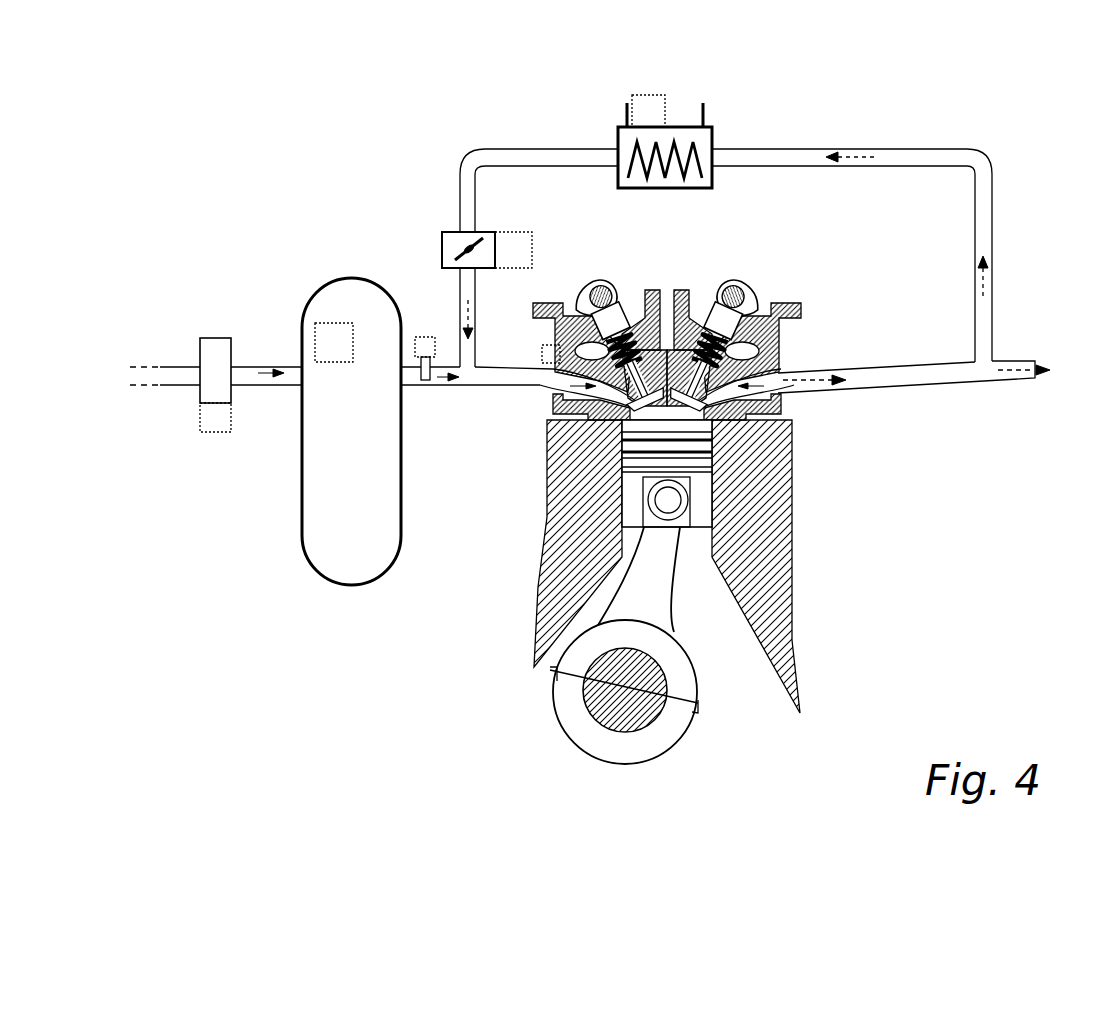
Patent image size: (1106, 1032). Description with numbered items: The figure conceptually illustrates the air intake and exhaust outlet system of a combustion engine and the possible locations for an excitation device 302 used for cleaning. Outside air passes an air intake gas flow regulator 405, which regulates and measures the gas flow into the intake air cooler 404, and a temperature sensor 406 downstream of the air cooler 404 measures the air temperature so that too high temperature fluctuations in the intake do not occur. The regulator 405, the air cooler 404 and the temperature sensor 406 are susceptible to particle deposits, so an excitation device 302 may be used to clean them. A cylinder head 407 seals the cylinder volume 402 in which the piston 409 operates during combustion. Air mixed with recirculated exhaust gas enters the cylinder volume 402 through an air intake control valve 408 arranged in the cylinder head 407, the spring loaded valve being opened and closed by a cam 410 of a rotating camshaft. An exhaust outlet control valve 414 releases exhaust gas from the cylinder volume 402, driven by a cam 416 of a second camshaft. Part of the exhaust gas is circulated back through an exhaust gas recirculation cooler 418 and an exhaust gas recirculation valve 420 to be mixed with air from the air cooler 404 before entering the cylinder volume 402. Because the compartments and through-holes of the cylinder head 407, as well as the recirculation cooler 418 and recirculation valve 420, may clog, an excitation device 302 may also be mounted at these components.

The excitation device 302 is at (204, 433).
The cylinder volume 402 is at (597, 503).
The intake air cooler 404 is at (350, 292).
The air intake gas flow regulator 405 is at (217, 337).
The temperature sensor 406 is at (422, 387).
The cylinder head 407 is at (577, 327).
The air intake control valve 408 is at (668, 420).
The piston 409 is at (709, 498).
The cam 410 is at (601, 278).
The exhaust outlet control valve 414 is at (734, 354).
The cam 416 is at (735, 279).
The exhaust gas recirculation cooler 418 is at (672, 127).
The exhaust gas recirculation valve 420 is at (444, 230).